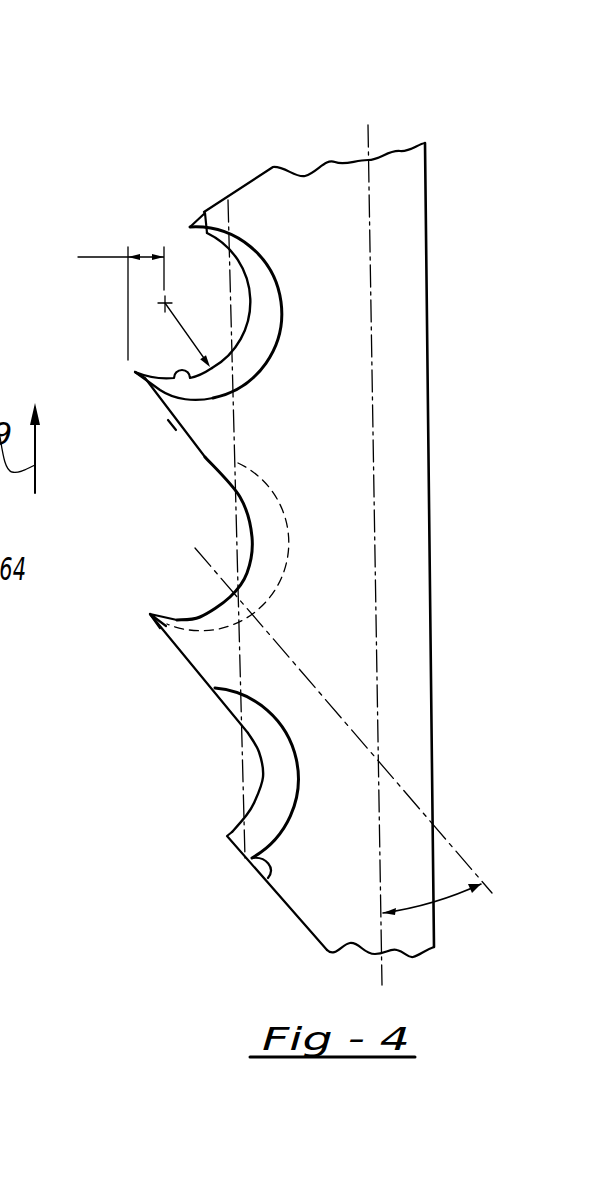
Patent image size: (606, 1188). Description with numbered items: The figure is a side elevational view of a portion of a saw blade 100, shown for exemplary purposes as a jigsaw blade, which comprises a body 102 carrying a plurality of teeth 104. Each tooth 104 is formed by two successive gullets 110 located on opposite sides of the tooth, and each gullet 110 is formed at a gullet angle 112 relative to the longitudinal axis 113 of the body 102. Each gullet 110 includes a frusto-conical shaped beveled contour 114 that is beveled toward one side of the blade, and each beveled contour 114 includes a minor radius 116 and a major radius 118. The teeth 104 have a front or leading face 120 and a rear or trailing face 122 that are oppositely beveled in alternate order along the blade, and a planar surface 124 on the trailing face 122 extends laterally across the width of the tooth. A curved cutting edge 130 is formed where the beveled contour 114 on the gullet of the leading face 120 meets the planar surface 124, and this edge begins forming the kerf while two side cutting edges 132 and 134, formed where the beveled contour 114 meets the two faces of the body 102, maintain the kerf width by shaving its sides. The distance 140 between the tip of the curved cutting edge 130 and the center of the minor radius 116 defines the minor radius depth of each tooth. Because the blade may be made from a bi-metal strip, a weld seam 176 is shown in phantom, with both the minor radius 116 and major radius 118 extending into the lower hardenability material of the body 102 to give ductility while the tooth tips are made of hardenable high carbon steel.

The saw blade 100 is at (392, 108).
The body 102 is at (432, 597).
The teeth 104 is at (200, 657).
The gullet 110 is at (202, 541).
The gullet angle 112 is at (452, 897).
The longitudinal axis 113 is at (372, 314).
The beveled contour 114 is at (267, 327).
The minor radius 116 is at (213, 398).
The major radius 118 is at (266, 878).
The leading face 120 is at (177, 617).
The trailing face 122 is at (157, 627).
The planar surface 124 is at (173, 425).
The curved cutting edge 130 is at (150, 385).
The side cutting edge 132 is at (204, 213).
The side cutting edge 134 is at (280, 272).
The distance 140 is at (110, 306).
The weld seam 176 is at (236, 443).